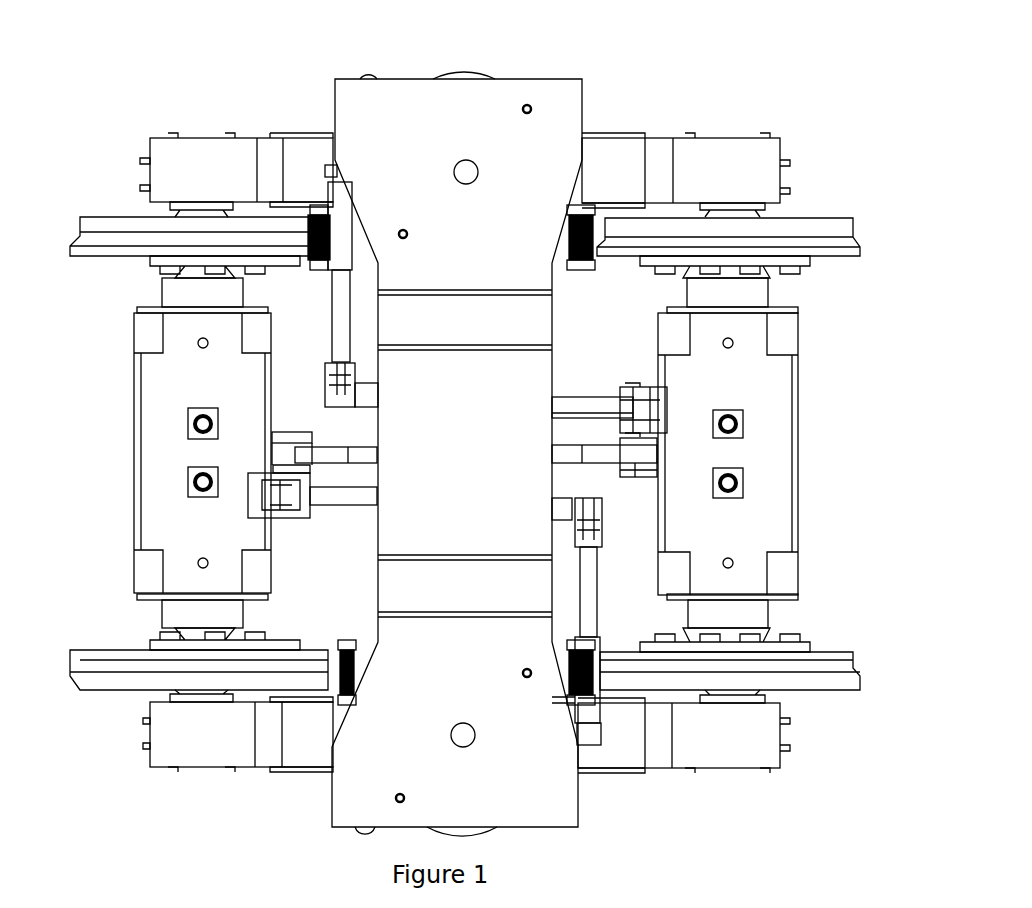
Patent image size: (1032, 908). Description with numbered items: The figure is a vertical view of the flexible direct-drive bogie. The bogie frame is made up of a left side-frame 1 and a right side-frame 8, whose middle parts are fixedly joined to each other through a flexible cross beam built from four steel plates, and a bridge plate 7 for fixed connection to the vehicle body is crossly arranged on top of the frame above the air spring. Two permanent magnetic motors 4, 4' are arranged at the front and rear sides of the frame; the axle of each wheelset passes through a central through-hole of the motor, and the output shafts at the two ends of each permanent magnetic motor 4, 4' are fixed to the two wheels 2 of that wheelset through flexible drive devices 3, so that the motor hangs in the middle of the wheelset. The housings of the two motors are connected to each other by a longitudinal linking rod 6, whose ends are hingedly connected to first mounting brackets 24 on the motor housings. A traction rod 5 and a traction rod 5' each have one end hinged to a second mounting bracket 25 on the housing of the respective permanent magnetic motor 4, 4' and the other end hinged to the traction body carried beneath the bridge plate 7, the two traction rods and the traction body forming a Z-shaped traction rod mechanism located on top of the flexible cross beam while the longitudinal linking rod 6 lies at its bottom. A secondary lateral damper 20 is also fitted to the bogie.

The left side-frame 1 is at (618, 163).
The wheel 2 is at (790, 228).
The flexible drive devices 3 is at (792, 287).
The permanent magnetic motor 4 is at (767, 454).
The permanent magnetic motor 4' is at (169, 453).
The traction rod 5 is at (592, 377).
The traction rod 5' is at (312, 533).
The longitudinal linking rod 6 is at (332, 453).
The bridge plate 7 is at (482, 125).
The right side-frame 8 is at (627, 737).
The secondary lateral damper 20 is at (585, 583).
The first mounting bracket 24 is at (647, 470).
The second mounting bracket 25 is at (652, 393).